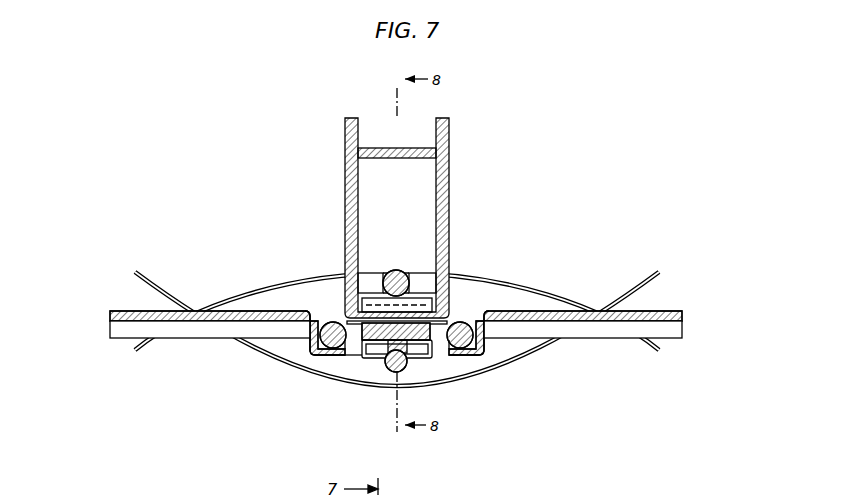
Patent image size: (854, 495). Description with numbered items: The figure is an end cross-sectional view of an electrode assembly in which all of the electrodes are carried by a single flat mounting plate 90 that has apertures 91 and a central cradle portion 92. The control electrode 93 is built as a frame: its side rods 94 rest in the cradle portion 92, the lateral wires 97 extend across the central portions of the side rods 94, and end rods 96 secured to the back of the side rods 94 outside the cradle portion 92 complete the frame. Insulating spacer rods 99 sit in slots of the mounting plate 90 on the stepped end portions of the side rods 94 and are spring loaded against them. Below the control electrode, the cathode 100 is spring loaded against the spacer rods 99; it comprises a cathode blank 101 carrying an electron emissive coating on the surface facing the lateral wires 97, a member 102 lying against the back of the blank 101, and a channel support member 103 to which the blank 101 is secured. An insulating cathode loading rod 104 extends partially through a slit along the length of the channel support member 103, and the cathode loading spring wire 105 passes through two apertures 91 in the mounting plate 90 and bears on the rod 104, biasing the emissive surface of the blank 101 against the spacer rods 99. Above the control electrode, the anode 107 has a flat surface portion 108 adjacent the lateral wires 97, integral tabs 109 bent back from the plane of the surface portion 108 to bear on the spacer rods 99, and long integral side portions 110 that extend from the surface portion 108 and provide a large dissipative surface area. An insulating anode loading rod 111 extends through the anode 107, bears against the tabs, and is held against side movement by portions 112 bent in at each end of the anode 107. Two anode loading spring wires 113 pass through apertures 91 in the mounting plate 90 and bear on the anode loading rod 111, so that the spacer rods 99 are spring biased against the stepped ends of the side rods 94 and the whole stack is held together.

The mounting plate 90 is at (672, 312).
The apertures 91 is at (198, 312).
The central cradle portion 92 is at (476, 353).
The control electrode 93 is at (310, 326).
The side rods 94 is at (322, 342).
The end rods 96 is at (328, 367).
The lateral wires 97 is at (360, 321).
The insulating spacer rods 99 is at (487, 306).
The cathode 100 is at (432, 358).
The cathode blank 101 is at (342, 365).
The member 102 is at (362, 355).
The channel support member 103 is at (357, 358).
The insulating cathode loading rod 104 is at (387, 372).
The cathode loading spring wire 105 is at (225, 338).
The anode 107 is at (497, 160).
The flat surface portion 108 is at (363, 272).
The integral tabs 109 is at (441, 296).
The integral side portions 110 is at (450, 216).
The insulating anode loading rod 111 is at (396, 271).
The bent-in portions 112 is at (375, 277).
The anode loading spring wires 113 is at (472, 273).